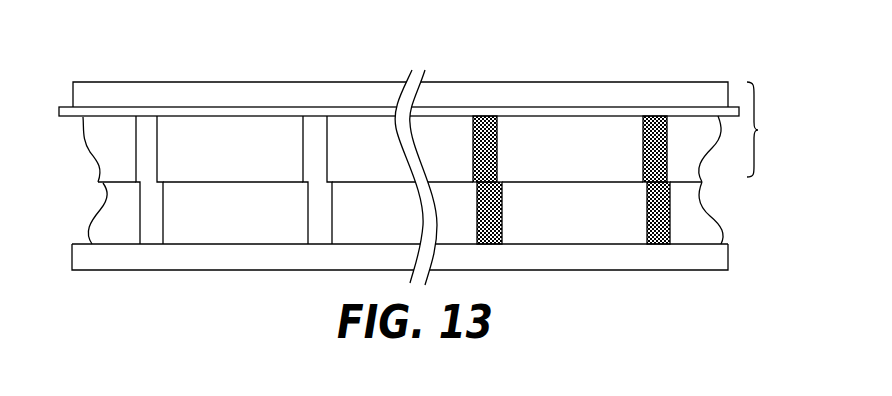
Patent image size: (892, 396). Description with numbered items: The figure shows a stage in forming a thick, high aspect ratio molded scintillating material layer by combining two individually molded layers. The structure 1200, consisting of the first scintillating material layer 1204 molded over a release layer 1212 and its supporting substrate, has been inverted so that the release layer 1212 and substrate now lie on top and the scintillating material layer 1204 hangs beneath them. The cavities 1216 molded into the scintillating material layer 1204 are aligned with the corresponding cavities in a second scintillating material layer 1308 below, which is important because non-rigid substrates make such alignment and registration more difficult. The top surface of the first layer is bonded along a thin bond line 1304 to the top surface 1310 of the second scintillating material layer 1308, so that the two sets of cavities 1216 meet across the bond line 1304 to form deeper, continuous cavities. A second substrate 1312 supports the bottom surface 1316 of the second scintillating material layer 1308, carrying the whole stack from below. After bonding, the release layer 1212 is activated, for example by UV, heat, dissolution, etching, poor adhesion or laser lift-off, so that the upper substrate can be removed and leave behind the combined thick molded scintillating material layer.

The structure 1200 is at (440, 132).
The scintillating material layer 1204 is at (112, 127).
The release layer 1212 is at (68, 112).
The cavities 1216 is at (147, 131).
The bond line 1304 is at (683, 184).
The second scintillating material layer 1308 is at (92, 213).
The top surface 1310 is at (203, 181).
The second substrate 1312 is at (72, 257).
The bottom surface 1316 is at (203, 246).